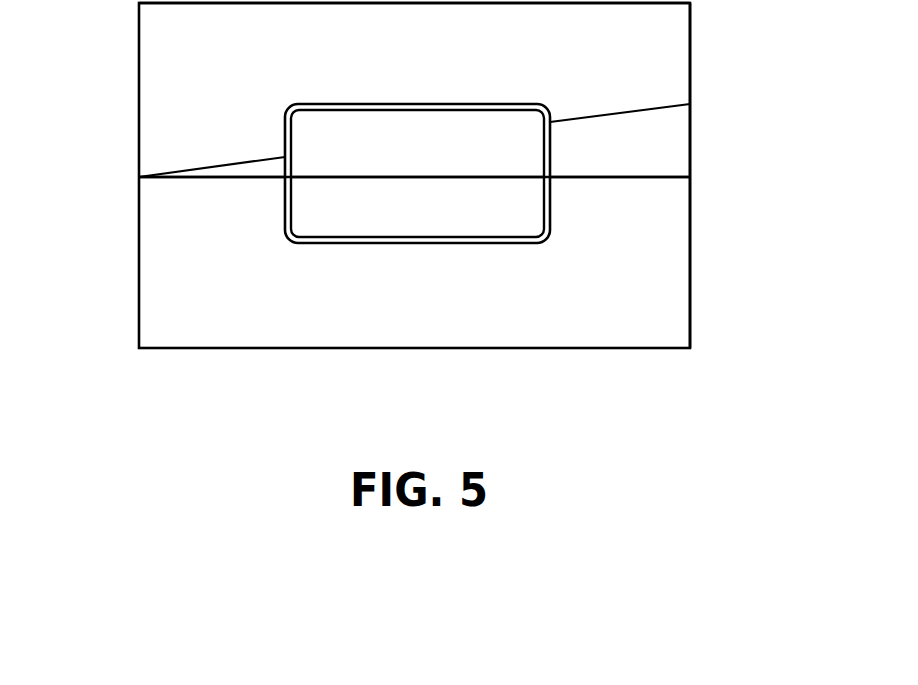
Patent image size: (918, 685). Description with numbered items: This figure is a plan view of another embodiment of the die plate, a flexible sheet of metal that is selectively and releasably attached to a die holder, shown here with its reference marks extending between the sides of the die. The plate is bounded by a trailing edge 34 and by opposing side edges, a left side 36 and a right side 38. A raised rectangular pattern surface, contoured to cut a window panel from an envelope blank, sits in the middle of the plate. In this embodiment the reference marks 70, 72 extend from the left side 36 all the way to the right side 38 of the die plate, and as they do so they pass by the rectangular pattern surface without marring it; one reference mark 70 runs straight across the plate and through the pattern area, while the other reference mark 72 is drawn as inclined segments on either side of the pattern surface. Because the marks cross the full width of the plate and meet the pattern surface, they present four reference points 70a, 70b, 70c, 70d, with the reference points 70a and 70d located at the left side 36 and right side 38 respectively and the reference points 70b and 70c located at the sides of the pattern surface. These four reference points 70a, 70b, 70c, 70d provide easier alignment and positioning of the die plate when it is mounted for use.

The trailing edge 34 is at (403, 349).
The left side edge 36 is at (146, 29).
The right side edge 38 is at (691, 28).
The reference mark 70 is at (208, 180).
The first reference point 70a is at (139, 177).
The second reference point 70b is at (291, 177).
The third reference point 70c is at (544, 177).
The fourth reference point 70d is at (690, 176).
The reference mark 72 is at (207, 167).